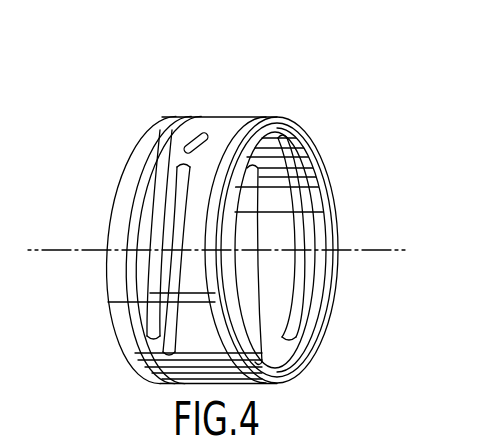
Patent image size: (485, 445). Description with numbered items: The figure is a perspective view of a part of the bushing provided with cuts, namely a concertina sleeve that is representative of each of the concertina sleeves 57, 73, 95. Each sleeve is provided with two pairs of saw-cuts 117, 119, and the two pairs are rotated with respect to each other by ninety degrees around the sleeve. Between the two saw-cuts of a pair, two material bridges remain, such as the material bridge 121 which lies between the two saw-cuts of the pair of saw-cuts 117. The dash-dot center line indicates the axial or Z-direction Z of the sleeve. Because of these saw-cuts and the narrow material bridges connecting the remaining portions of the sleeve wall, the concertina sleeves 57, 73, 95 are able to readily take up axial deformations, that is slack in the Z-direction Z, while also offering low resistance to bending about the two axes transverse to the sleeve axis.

The concertina sleeve 57 is at (222, 196).
The concertina sleeve 73 is at (222, 249).
The concertina sleeve 95 is at (222, 249).
The pair of saw-cuts 117 is at (182, 190).
The pair of saw-cuts 119 is at (145, 367).
The material bridge 121 is at (258, 111).
The Z-direction Z is at (373, 247).